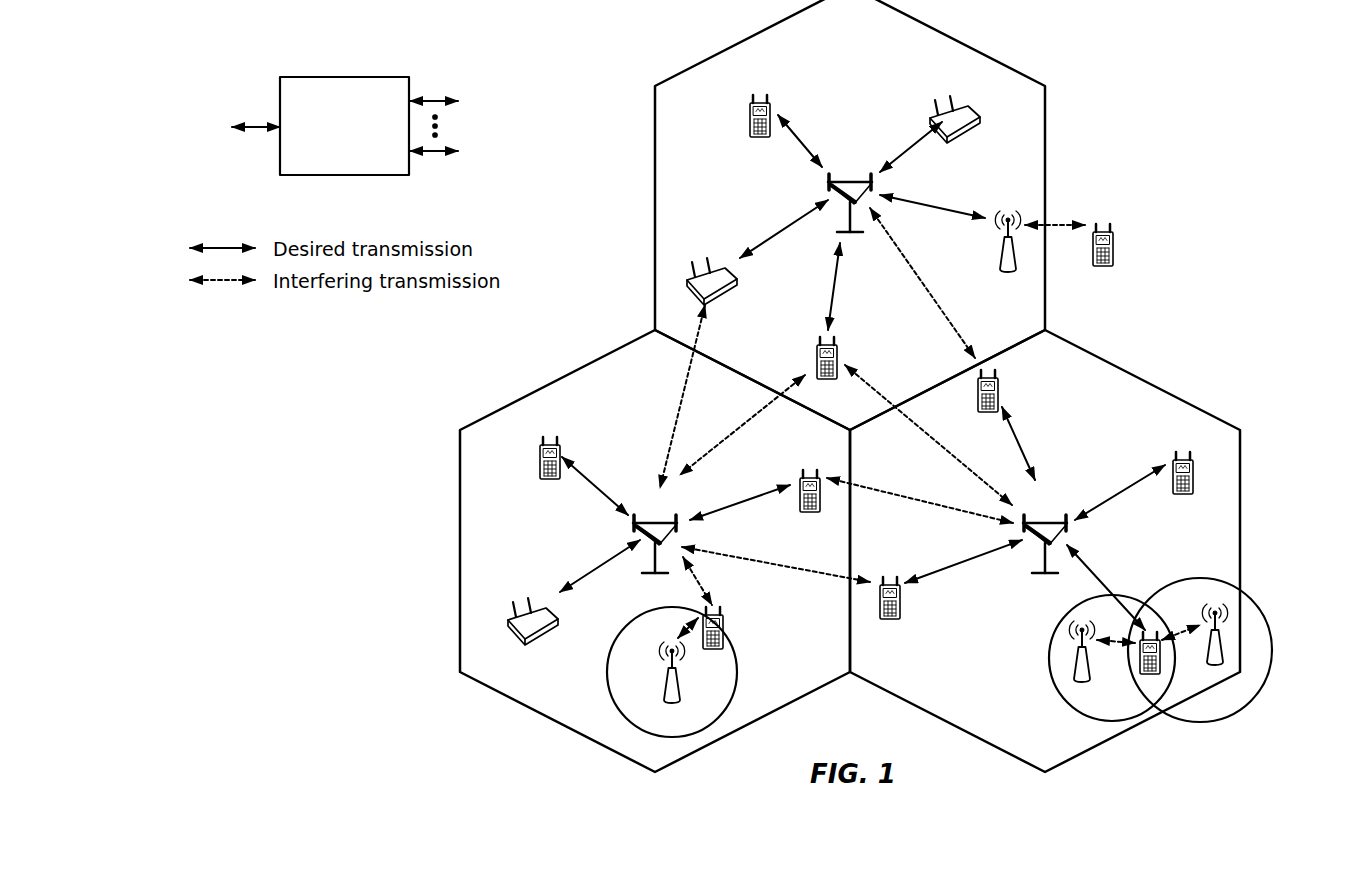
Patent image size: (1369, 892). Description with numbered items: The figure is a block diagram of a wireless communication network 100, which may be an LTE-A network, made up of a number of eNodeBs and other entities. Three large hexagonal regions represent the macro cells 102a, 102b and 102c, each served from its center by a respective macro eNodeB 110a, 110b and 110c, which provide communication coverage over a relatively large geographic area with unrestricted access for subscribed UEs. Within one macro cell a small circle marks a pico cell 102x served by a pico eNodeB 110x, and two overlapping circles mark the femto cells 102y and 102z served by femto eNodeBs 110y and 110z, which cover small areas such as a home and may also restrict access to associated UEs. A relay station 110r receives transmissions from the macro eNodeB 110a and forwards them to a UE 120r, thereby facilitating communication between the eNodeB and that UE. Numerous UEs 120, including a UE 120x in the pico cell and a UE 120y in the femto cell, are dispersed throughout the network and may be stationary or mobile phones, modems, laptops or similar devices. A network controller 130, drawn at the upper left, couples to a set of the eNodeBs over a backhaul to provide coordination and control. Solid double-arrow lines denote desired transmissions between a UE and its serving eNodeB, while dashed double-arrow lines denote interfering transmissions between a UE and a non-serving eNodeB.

The wireless communication network 100 is at (1177, 52).
The network controller 130 is at (343, 76).
The macro cell 102a is at (960, 25).
The macro cell 102b is at (551, 382).
The macro cell 102c is at (1150, 380).
The pico cell 102x is at (627, 621).
The femto cell 102y is at (1052, 625).
The femto cell 102z is at (1198, 577).
The macro eNodeB 110a is at (849, 179).
The macro eNodeB 110b is at (657, 520).
The macro eNodeB 110c is at (1049, 519).
The relay station 110r is at (995, 256).
The pico eNodeB 110x is at (680, 696).
The femto eNodeB 110y is at (1088, 670).
The femto eNodeB 110z is at (1221, 654).
The user equipment 120 is at (749, 112).
The UE 120r is at (1111, 256).
The UE 120x is at (732, 616).
The UE 120y is at (1139, 672).